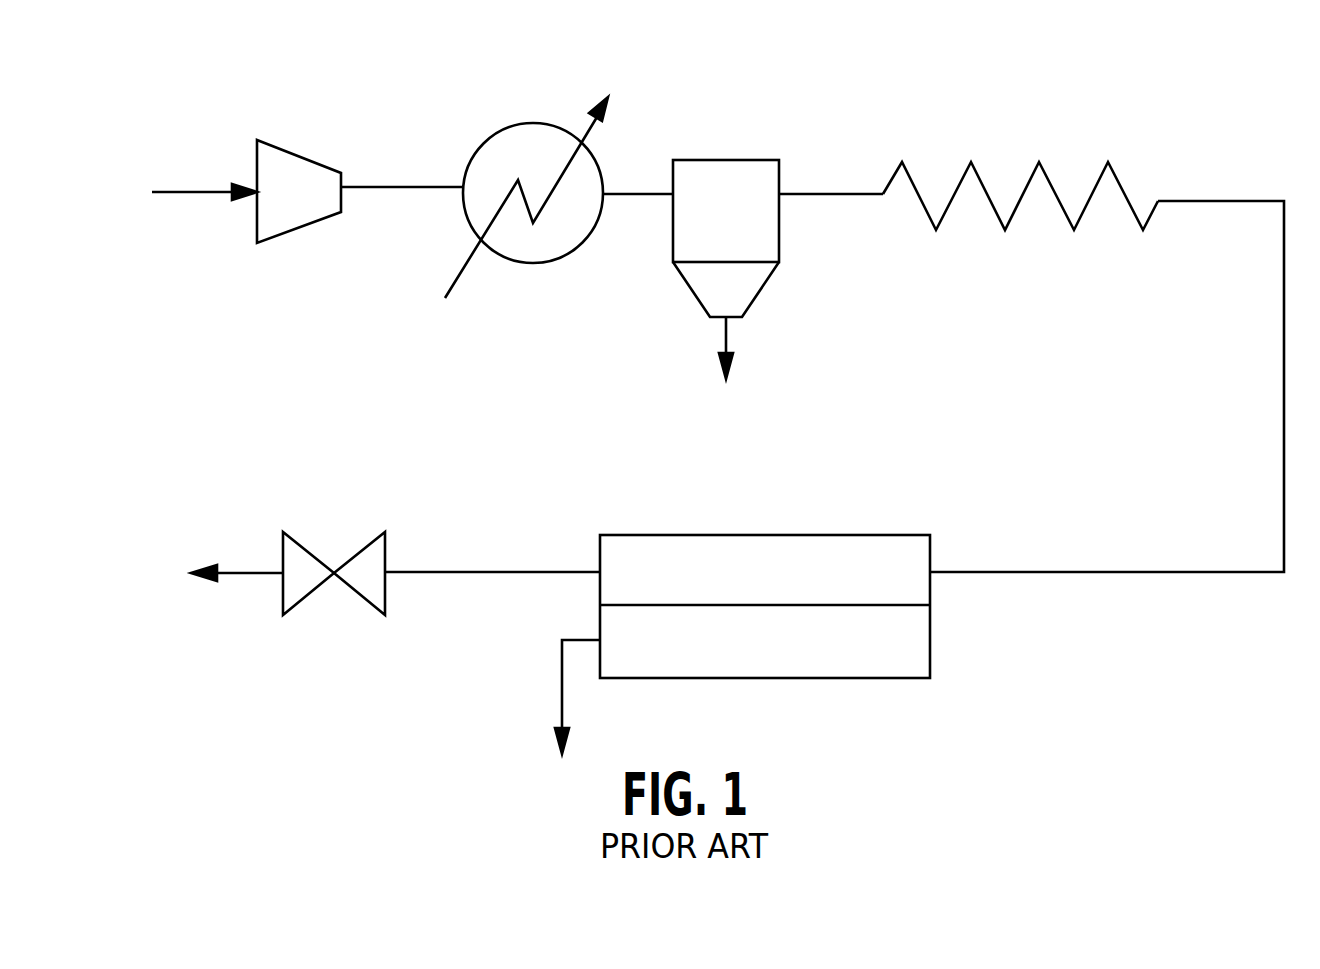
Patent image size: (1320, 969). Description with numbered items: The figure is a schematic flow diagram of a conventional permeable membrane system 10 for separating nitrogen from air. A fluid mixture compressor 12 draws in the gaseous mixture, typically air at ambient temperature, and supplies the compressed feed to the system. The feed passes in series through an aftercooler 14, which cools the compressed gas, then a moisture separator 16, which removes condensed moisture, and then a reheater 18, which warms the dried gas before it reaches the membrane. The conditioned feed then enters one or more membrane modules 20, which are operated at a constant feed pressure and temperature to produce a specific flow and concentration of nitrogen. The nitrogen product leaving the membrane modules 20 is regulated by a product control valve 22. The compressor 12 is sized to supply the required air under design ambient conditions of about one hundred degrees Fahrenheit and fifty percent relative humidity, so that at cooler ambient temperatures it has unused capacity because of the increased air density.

The conventional membrane system 10 is at (903, 84).
The fluid mixture compressor 12 is at (294, 153).
The aftercooler 14 is at (518, 125).
The moisture separator 16 is at (720, 158).
The reheater 18 is at (1120, 182).
The membrane modules 20 is at (793, 533).
The product control valve 22 is at (302, 545).